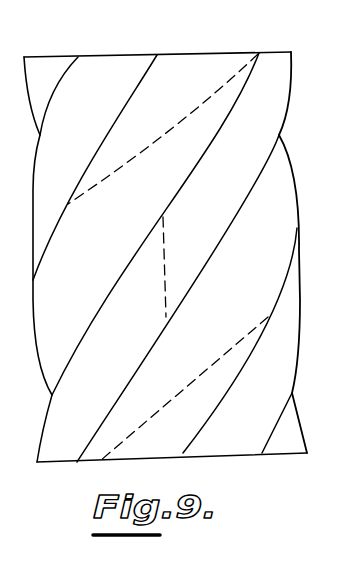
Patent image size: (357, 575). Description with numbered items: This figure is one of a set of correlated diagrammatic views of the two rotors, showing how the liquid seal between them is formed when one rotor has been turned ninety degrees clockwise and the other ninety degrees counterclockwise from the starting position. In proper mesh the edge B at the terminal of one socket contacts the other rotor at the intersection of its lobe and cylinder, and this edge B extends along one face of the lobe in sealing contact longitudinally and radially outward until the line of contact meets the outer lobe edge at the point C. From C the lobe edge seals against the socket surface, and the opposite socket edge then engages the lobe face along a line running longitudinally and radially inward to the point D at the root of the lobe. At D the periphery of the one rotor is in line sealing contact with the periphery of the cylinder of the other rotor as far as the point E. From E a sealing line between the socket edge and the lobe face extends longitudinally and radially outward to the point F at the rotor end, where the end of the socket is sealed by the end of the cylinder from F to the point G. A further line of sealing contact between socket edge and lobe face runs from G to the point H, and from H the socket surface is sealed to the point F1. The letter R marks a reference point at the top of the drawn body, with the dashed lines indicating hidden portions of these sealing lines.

The edge B is at (157, 55).
The upper reference point on top edge R is at (260, 53).
The point C is at (63, 209).
The point D is at (163, 211).
The point E is at (165, 317).
The point H is at (267, 313).
The point F is at (77, 462).
The point F1 is at (100, 462).
The point G is at (236, 436).